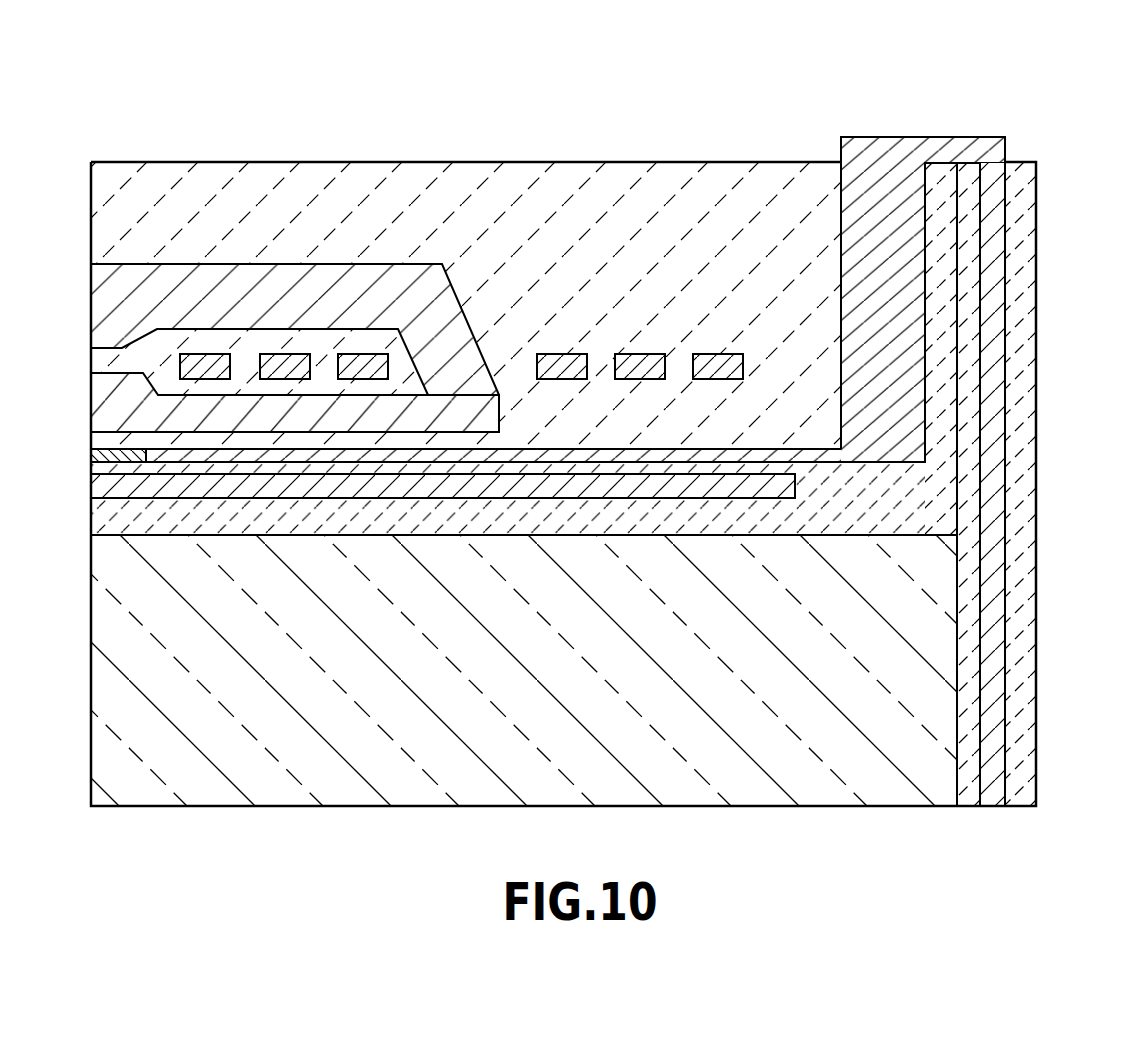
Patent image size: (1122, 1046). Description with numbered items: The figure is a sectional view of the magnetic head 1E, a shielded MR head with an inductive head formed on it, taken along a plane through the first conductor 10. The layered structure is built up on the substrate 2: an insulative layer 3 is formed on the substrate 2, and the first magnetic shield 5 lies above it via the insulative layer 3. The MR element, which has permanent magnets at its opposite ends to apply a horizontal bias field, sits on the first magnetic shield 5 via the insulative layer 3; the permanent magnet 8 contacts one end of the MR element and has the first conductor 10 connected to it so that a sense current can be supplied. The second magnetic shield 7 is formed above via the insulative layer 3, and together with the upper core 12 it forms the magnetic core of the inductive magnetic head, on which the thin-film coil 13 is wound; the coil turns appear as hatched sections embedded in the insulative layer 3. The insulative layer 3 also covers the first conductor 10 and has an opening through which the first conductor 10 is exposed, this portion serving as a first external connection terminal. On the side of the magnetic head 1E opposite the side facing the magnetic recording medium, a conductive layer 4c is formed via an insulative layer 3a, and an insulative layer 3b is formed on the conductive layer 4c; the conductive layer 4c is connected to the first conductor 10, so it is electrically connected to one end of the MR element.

The magnetic head 1E is at (815, 120).
The substrate 2 is at (103, 664).
The insulative layer 3 is at (103, 204).
The insulative layer 3a is at (975, 503).
The insulative layer 3b is at (1018, 343).
The conductive layer 4c is at (993, 417).
The first magnetic shield 5 is at (103, 486).
The second magnetic shield 7 is at (103, 410).
The permanent magnet 8 is at (103, 455).
The first conductor 10 is at (919, 152).
The upper core 12 is at (103, 283).
The thin-film coil 13 is at (205, 356).